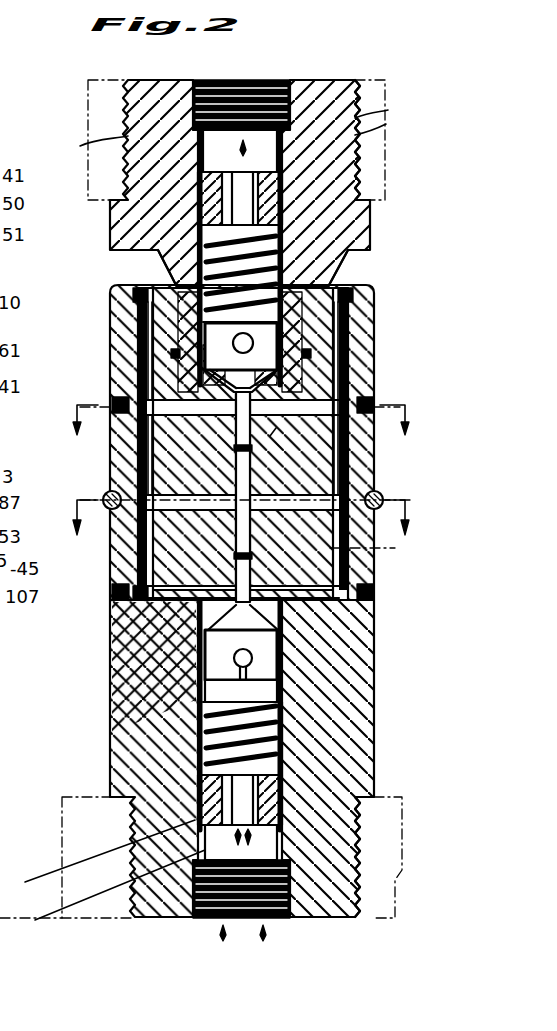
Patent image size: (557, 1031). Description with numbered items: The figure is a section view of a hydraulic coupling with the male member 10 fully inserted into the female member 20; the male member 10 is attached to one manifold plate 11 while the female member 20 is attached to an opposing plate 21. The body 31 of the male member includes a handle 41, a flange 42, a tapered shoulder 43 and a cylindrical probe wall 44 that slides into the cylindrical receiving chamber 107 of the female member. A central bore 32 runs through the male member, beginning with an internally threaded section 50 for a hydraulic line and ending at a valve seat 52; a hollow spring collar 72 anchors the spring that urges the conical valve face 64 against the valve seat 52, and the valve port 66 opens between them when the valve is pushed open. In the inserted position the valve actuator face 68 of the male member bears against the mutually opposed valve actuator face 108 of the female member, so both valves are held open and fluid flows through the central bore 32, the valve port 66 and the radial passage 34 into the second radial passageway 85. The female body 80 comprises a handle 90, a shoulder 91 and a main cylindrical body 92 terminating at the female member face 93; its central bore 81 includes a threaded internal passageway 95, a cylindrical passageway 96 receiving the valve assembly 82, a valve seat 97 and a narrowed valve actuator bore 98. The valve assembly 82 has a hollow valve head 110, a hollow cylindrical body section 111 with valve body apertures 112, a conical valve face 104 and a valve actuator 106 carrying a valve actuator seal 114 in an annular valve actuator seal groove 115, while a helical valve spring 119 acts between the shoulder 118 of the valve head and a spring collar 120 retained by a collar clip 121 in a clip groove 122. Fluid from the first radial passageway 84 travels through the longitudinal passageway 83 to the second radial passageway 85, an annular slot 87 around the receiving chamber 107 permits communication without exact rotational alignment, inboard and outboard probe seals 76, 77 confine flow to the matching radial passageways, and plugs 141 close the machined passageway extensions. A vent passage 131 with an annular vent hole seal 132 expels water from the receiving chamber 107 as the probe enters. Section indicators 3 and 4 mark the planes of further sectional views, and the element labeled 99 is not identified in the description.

The section line 3- 3 is at (239, 406).
The section line 4- 4 is at (239, 506).
The male member 10 is at (372, 250).
The manifold plate 11 is at (374, 80).
The female member 20 is at (106, 762).
The manifold plate 21 is at (80, 921).
The body 31 is at (128, 139).
The central bore 32 is at (246, 150).
The radial passage 34 is at (273, 442).
The handle 41 is at (330, 138).
The flange 42 is at (112, 235).
The tapered shoulder 43 is at (165, 258).
The cylindrical probe wall 44 is at (300, 345).
The internally threaded section 50 is at (287, 112).
The valve seat 52 is at (300, 395).
The valve face 64 is at (175, 353).
The valve port 66 is at (205, 380).
The valve actuator face 68 is at (202, 457).
The hollow spring collar 72 is at (282, 207).
The inboard probe seal 76 is at (140, 332).
The outboard probe seal 77 is at (140, 460).
The body 80 is at (340, 881).
The central bore 81 is at (243, 925).
The valve assembly 82 is at (250, 645).
The longitudinal passageway 83 is at (360, 578).
The first radial passageway 84 is at (320, 628).
The second radial passageway 85 is at (344, 440).
The annular slot 87 is at (345, 363).
The handle 90 is at (358, 903).
The shoulder 91 is at (358, 803).
The main cylindrical body 92 is at (345, 726).
The female member face 93 is at (283, 300).
The threaded internal passageway 95 is at (292, 900).
The cylindrical passageway 96 is at (355, 835).
The valve seat 97 is at (236, 614).
The valve actuator bore 98 is at (133, 563).
The passage 99 is at (236, 626).
The valve face 104 is at (250, 640).
The valve actuator 106 is at (236, 606).
The cylindrical receiving chamber 107 is at (112, 490).
The valve actuator face 108 is at (191, 526).
The hollow valve head 110 is at (282, 702).
The hollow cylindrical body section 111 is at (282, 670).
The valve body apertures 112 is at (282, 632).
The valve actuator seal 114 is at (252, 560).
The annular valve actuator seal groove 115 is at (345, 612).
The shoulder 118 is at (205, 725).
The helical valve spring 119 is at (282, 753).
The spring collar 120 is at (282, 800).
The collar clip 121 is at (97, 855).
The clip groove 122 is at (102, 890).
The vent passage 131 is at (377, 548).
The annular vent hole seal 132 is at (374, 494).
The plugs 141 is at (358, 296).